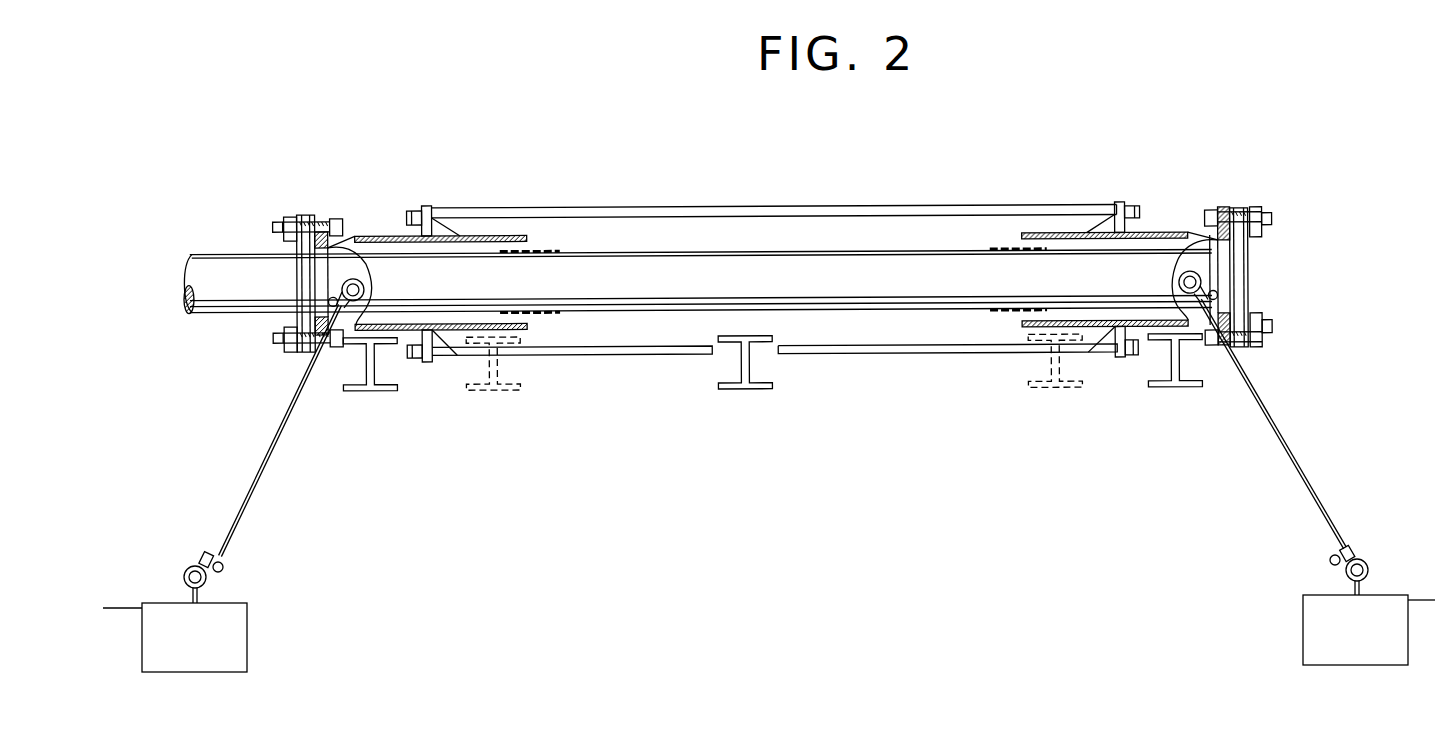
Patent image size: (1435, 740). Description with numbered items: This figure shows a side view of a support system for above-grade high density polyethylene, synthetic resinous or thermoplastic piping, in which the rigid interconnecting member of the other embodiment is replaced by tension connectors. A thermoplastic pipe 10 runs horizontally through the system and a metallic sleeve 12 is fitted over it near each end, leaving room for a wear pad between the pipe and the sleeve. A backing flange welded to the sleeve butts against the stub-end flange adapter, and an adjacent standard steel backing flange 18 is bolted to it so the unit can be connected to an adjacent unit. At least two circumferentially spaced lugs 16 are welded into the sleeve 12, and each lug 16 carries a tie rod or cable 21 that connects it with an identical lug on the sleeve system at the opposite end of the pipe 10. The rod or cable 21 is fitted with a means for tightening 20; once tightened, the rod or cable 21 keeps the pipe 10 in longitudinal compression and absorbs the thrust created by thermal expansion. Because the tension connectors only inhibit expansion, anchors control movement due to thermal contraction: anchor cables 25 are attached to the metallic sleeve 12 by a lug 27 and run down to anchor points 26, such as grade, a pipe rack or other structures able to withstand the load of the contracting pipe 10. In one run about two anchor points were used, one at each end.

The thermoplastic pipe 10 is at (697, 318).
The metallic sleeve 12 is at (393, 228).
The lug 16 is at (441, 215).
The adjacent backing flange 18 is at (1276, 228).
The means for tightening 20 is at (1138, 197).
The tie rod or cable 21 is at (603, 204).
The anchor cable 25 is at (279, 446).
The anchor point 26 is at (219, 592).
The lug 27 is at (340, 290).